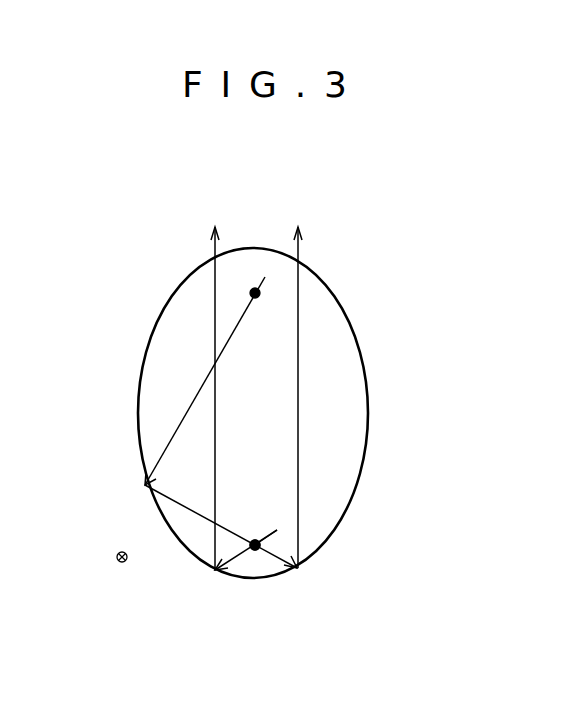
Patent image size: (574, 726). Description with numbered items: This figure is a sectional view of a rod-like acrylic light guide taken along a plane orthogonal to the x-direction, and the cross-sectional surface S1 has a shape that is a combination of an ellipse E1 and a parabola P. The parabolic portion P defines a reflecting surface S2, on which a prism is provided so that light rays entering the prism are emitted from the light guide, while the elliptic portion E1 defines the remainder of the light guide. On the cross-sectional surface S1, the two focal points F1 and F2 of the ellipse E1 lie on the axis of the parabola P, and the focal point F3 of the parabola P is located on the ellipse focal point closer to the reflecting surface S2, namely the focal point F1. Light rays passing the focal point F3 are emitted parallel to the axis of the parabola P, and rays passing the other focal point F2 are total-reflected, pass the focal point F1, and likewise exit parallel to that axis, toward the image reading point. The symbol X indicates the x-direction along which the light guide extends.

The ellipse E1 is at (363, 365).
The cross-sectional surface S1 is at (133, 252).
The reflecting surface S2 is at (320, 583).
The focal point of the ellipse F2 is at (255, 292).
The focal point of the ellipse F1 is at (254, 549).
The focal point of the parabola F3 is at (266, 599).
The parabola P is at (283, 574).
The X axis direction X is at (123, 572).